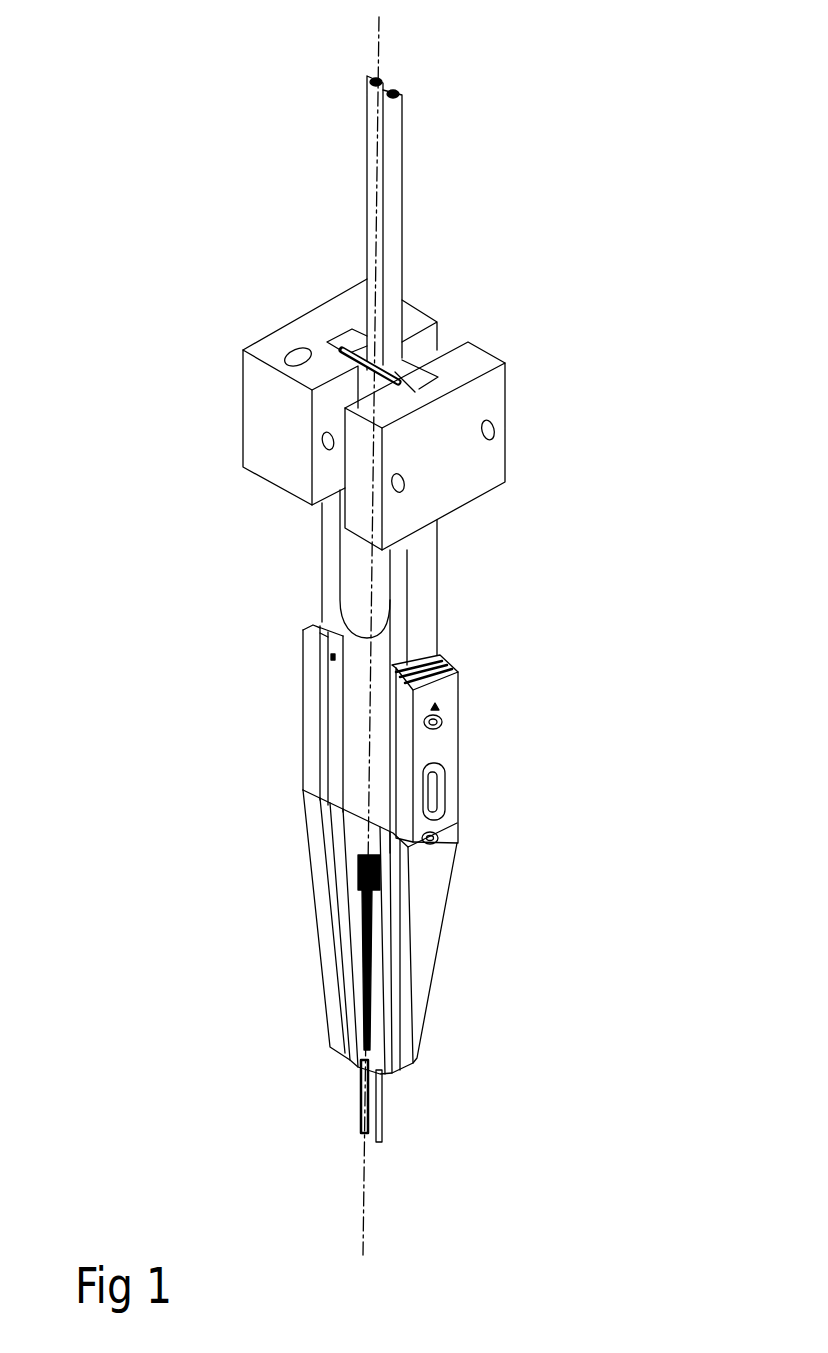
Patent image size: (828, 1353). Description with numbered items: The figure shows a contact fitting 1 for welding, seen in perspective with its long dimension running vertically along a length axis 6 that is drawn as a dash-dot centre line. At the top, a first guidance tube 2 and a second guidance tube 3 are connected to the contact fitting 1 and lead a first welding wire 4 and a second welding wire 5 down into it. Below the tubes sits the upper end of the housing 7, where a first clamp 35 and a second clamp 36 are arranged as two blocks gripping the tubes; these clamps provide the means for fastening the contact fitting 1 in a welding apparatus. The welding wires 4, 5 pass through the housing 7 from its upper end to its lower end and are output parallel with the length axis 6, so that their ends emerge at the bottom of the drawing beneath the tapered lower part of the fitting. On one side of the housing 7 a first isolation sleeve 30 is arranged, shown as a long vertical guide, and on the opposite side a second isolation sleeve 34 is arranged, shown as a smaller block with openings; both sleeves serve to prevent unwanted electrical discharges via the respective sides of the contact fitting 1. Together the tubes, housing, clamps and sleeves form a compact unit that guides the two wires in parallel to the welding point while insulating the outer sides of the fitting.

The contact fitting 1 is at (178, 223).
The first guidance tube 2 is at (377, 130).
The second guidance tube 3 is at (394, 160).
The first welding wire 4 is at (362, 1107).
The second welding wire 5 is at (382, 1108).
The length axis 6 is at (378, 28).
The housing 7 is at (423, 583).
The first isolation sleeve 30 is at (313, 683).
The second isolation sleeve 34 is at (447, 745).
The first clamp 35 is at (263, 407).
The second clamp 36 is at (492, 395).